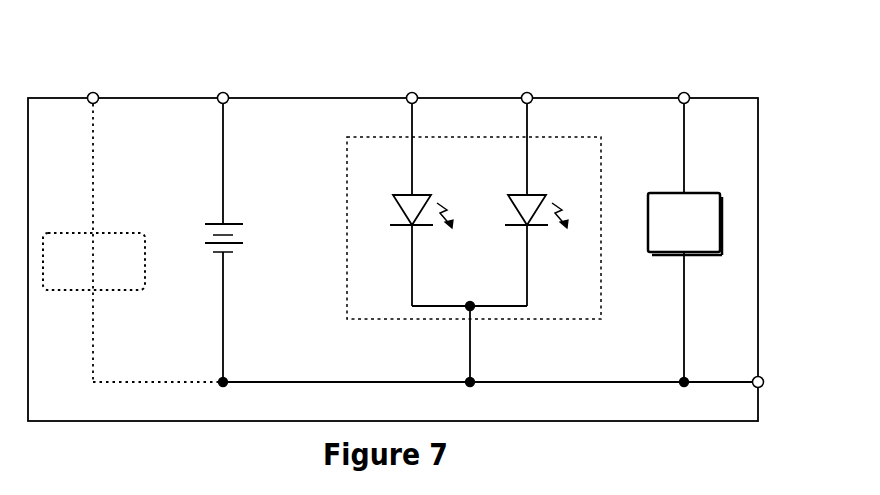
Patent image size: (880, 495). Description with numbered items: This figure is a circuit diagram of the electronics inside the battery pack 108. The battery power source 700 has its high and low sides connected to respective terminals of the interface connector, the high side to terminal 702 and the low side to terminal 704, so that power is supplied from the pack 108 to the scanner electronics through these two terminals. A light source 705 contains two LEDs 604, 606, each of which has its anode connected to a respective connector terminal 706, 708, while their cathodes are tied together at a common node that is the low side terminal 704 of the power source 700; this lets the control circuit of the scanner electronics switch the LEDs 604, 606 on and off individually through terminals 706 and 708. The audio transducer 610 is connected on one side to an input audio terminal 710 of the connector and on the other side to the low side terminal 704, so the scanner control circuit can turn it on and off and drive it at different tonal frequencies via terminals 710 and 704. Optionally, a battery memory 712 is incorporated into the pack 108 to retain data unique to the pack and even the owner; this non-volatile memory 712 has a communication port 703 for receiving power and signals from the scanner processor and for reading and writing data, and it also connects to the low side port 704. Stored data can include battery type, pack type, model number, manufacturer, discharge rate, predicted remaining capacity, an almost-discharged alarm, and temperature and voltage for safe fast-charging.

The battery pack 108 is at (758, 118).
The communication port 703 is at (93, 92).
The high side terminal 702 is at (223, 92).
The connector terminal 706 is at (412, 92).
The connector terminal 708 is at (527, 92).
The input audio terminal 710 is at (684, 92).
The low side terminal 704 is at (764, 383).
The battery power source 700 is at (243, 224).
The battery memory 712 is at (52, 292).
The light source 705 is at (347, 285).
The LED 604 is at (418, 194).
The LED 606 is at (519, 194).
The audio transducer 610 is at (720, 212).